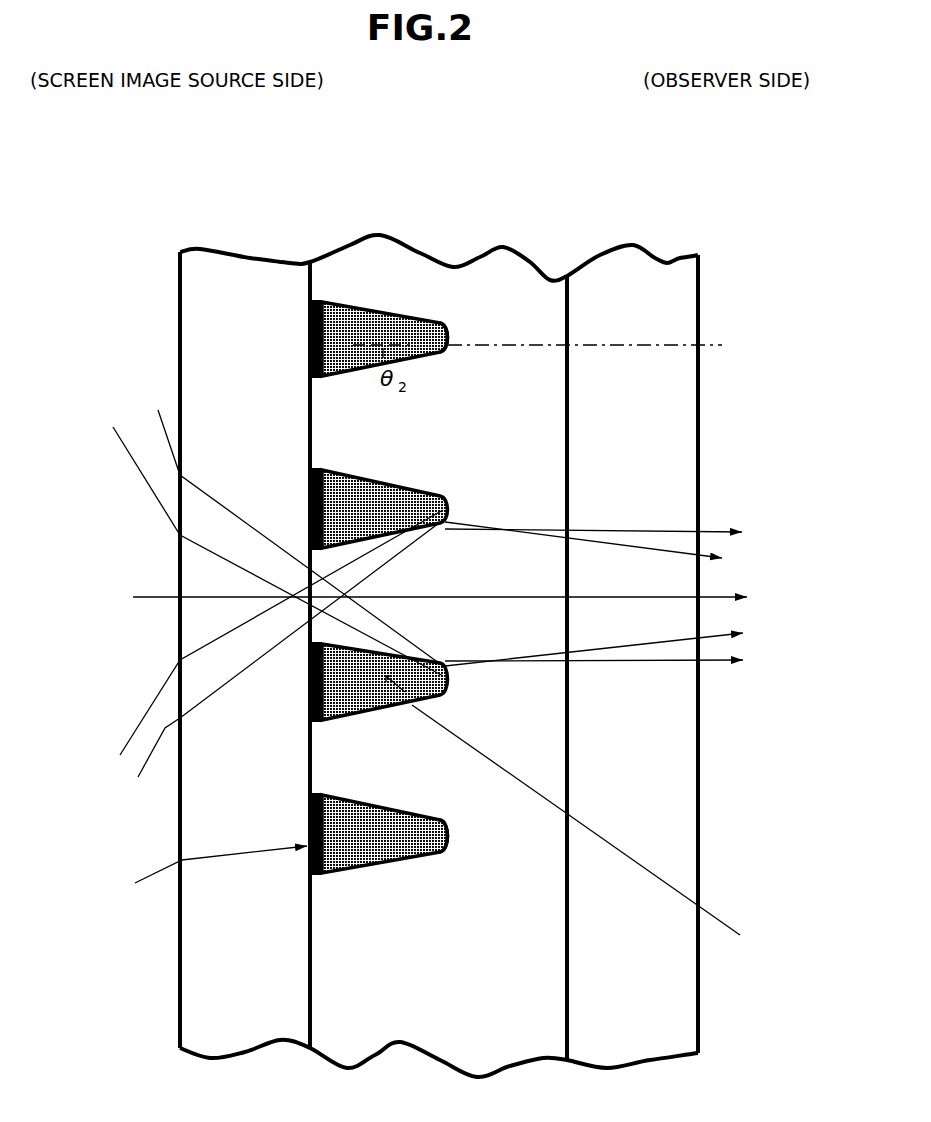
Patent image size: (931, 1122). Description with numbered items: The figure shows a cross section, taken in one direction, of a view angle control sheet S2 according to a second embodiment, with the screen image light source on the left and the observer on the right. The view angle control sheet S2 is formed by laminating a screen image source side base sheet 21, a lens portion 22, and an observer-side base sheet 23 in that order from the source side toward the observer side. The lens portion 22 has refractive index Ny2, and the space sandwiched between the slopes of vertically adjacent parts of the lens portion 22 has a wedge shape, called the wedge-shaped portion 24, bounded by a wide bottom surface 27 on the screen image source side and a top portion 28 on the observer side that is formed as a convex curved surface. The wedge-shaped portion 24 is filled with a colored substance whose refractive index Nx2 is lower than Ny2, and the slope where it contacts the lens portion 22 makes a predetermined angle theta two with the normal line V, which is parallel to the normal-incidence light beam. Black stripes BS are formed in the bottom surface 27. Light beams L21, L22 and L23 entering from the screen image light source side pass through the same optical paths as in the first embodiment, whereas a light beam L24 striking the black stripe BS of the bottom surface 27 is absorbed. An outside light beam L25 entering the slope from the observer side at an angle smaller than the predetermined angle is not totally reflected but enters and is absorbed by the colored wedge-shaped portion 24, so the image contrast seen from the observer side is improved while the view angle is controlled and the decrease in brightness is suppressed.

The screen image source side base sheet 21 is at (223, 293).
The lens portion 22 is at (418, 277).
The observer-side base sheet 23 is at (610, 280).
The wedge-shaped portion 24 is at (345, 303).
The bottom surface 27 is at (308, 340).
The top portion 28 is at (452, 338).
The black stripe BS is at (308, 373).
The view angle control sheet S2 is at (713, 202).
The normal line V is at (596, 344).
The light beam L21 is at (463, 597).
The light beam L22 is at (619, 533).
The light beam L23 is at (619, 546).
The light beam L24 is at (190, 870).
The outside light beam L25 is at (601, 831).